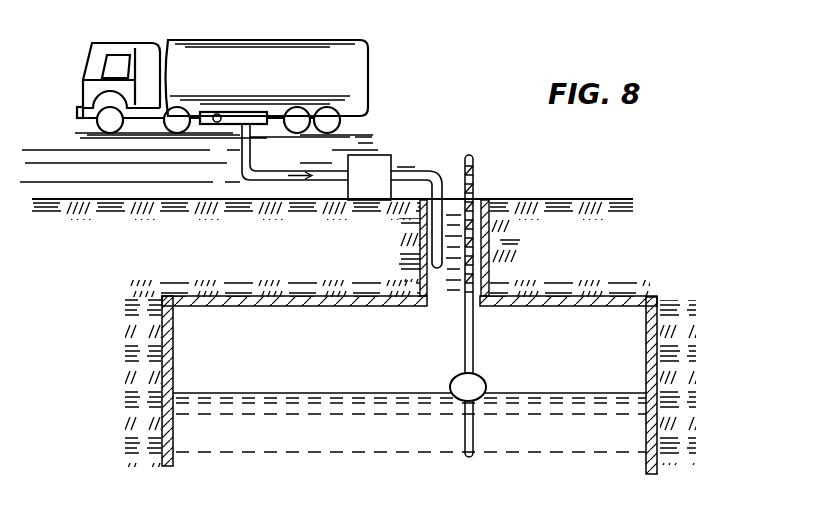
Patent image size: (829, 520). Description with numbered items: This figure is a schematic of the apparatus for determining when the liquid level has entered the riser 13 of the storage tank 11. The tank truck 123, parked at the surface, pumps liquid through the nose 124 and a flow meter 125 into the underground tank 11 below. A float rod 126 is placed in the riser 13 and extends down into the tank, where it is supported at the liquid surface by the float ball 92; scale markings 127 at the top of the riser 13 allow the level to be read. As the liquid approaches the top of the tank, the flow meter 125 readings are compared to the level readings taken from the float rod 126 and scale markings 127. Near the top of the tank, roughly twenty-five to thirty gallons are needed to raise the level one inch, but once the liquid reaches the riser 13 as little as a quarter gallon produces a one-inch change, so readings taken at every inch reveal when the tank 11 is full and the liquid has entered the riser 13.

The tank truck 123 is at (226, 40).
The nose 124 is at (272, 172).
The flow meter 125 is at (390, 155).
The tank 11 is at (263, 296).
The riser 13 is at (493, 257).
The scale markings 127 is at (474, 173).
The float rod 126 is at (474, 333).
The float ball 92 is at (487, 379).